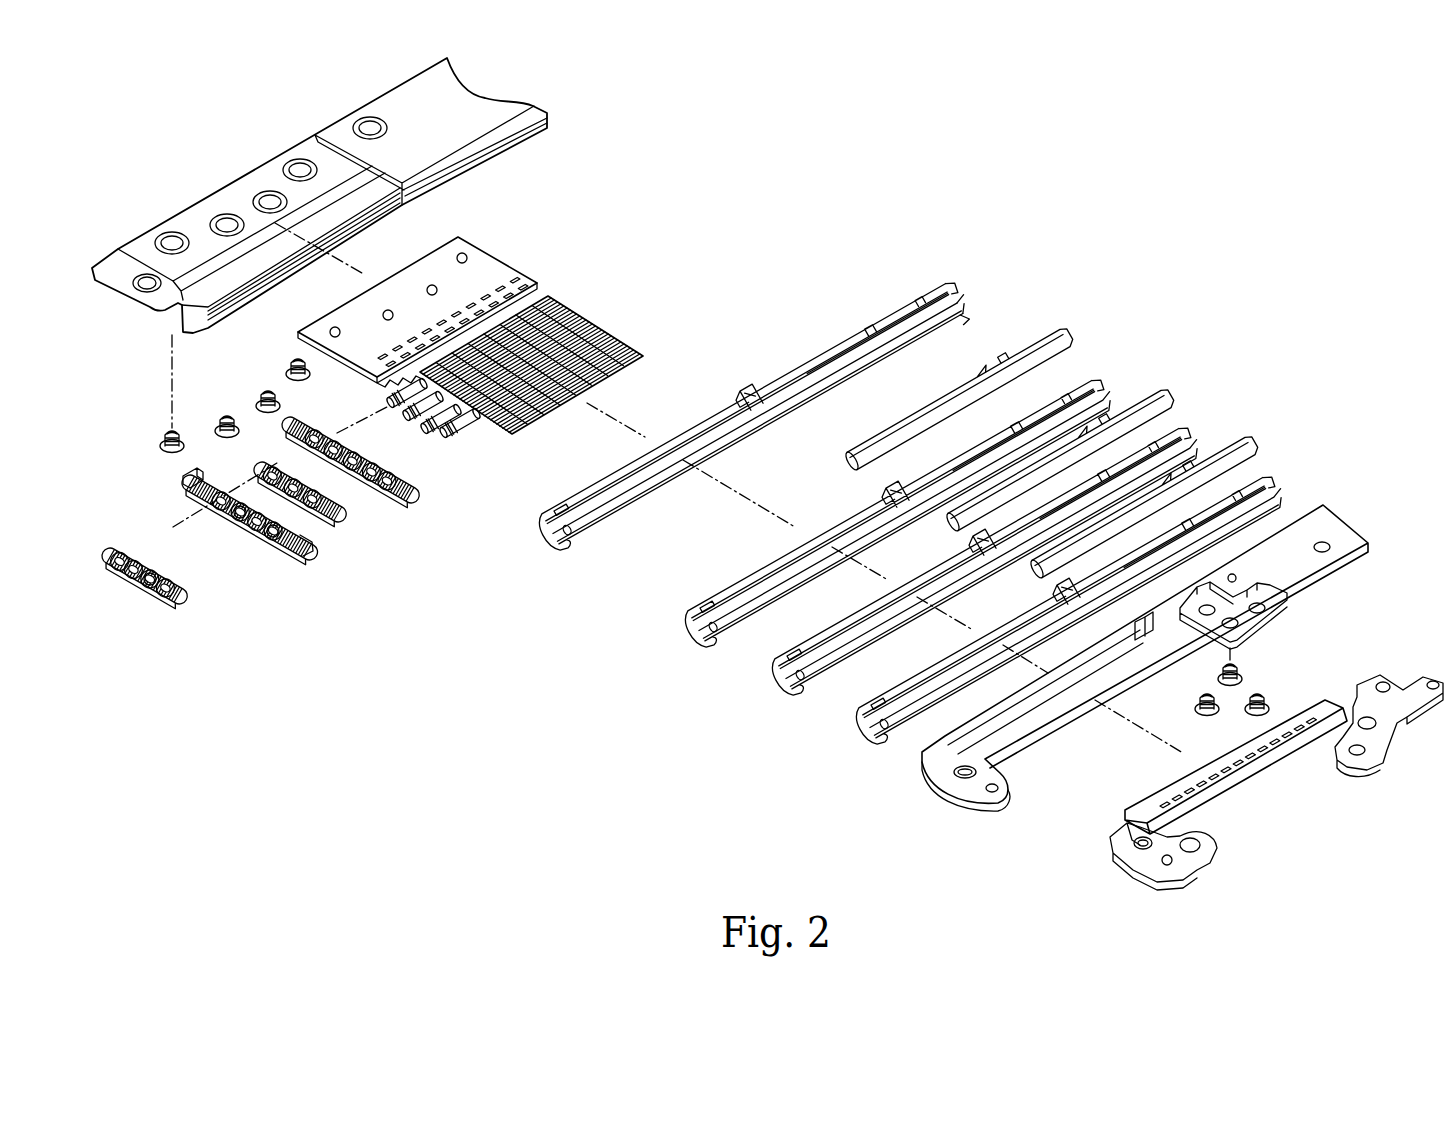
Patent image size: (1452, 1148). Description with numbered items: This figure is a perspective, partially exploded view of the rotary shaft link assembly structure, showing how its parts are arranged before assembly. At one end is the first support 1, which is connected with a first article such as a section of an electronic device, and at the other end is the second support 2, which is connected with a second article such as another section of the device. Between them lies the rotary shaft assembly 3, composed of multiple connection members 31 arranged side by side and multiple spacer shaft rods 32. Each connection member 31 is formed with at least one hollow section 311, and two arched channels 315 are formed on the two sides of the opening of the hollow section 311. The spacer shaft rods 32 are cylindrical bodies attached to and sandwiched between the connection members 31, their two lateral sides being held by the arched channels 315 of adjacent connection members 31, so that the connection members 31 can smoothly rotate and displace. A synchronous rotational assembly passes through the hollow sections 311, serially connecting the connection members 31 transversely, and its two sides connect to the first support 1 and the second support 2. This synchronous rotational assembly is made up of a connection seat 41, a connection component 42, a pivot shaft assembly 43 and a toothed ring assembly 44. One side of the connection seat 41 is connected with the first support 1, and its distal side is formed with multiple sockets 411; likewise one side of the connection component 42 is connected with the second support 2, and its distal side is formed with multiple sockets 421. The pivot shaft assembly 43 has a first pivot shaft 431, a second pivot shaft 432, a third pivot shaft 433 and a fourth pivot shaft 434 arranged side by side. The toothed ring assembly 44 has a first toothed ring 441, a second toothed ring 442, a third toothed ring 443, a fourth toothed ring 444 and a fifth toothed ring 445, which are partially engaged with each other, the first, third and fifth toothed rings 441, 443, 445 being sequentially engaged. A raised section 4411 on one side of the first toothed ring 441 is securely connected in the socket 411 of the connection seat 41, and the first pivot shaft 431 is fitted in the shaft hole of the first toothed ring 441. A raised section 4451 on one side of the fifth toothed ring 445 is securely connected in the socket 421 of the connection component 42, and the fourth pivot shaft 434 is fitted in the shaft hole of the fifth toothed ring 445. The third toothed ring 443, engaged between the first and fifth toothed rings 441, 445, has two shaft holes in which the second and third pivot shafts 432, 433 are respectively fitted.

The first support 1 is at (342, 125).
The second support 2 is at (1332, 530).
The rotary shaft assembly 3 is at (912, 460).
The connection member 31 is at (776, 384).
The hollow section 311 is at (643, 480).
The arched channel 315 is at (970, 340).
The spacer shaft rod 32 is at (957, 367).
The connection seat 41 is at (391, 296).
The socket 411 is at (477, 307).
The connection component 42 is at (1200, 795).
The socket 421 is at (1170, 798).
The pivot shaft assembly 43 is at (414, 478).
The first pivot shaft 431 is at (387, 402).
The second pivot shaft 432 is at (413, 410).
The third pivot shaft 433 is at (427, 430).
The fourth pivot shaft 434 is at (484, 467).
The toothed ring assembly 44 is at (253, 541).
The first toothed ring 441 is at (219, 545).
The raised section 4411 is at (180, 463).
The second toothed ring 442 is at (137, 604).
The third toothed ring 443 is at (243, 522).
The fourth toothed ring 444 is at (157, 594).
The fifth toothed ring 445 is at (287, 542).
The raised section 4451 is at (313, 530).